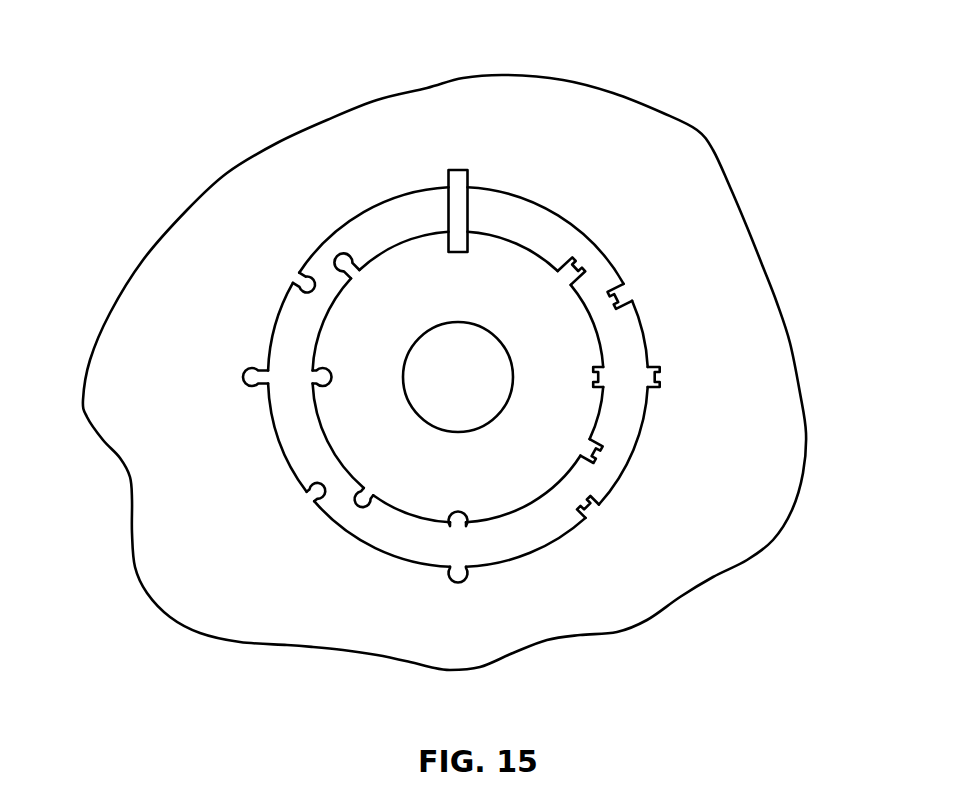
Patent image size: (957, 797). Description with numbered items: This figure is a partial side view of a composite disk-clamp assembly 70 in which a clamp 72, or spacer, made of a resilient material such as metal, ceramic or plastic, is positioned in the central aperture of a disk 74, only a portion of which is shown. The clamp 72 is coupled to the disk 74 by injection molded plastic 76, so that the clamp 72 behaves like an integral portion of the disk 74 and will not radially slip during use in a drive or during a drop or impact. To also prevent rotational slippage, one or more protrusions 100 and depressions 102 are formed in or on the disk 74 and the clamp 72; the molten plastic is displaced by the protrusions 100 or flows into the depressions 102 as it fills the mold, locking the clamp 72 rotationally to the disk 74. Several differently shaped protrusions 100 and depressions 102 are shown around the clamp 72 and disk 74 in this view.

The composite disk-clamp assembly 70 is at (197, 112).
The clamp 72 is at (388, 248).
The disk 74 is at (677, 162).
The injection molded plastic 76 is at (647, 327).
The protrusions 100 is at (367, 500).
The depressions 102 is at (243, 380).